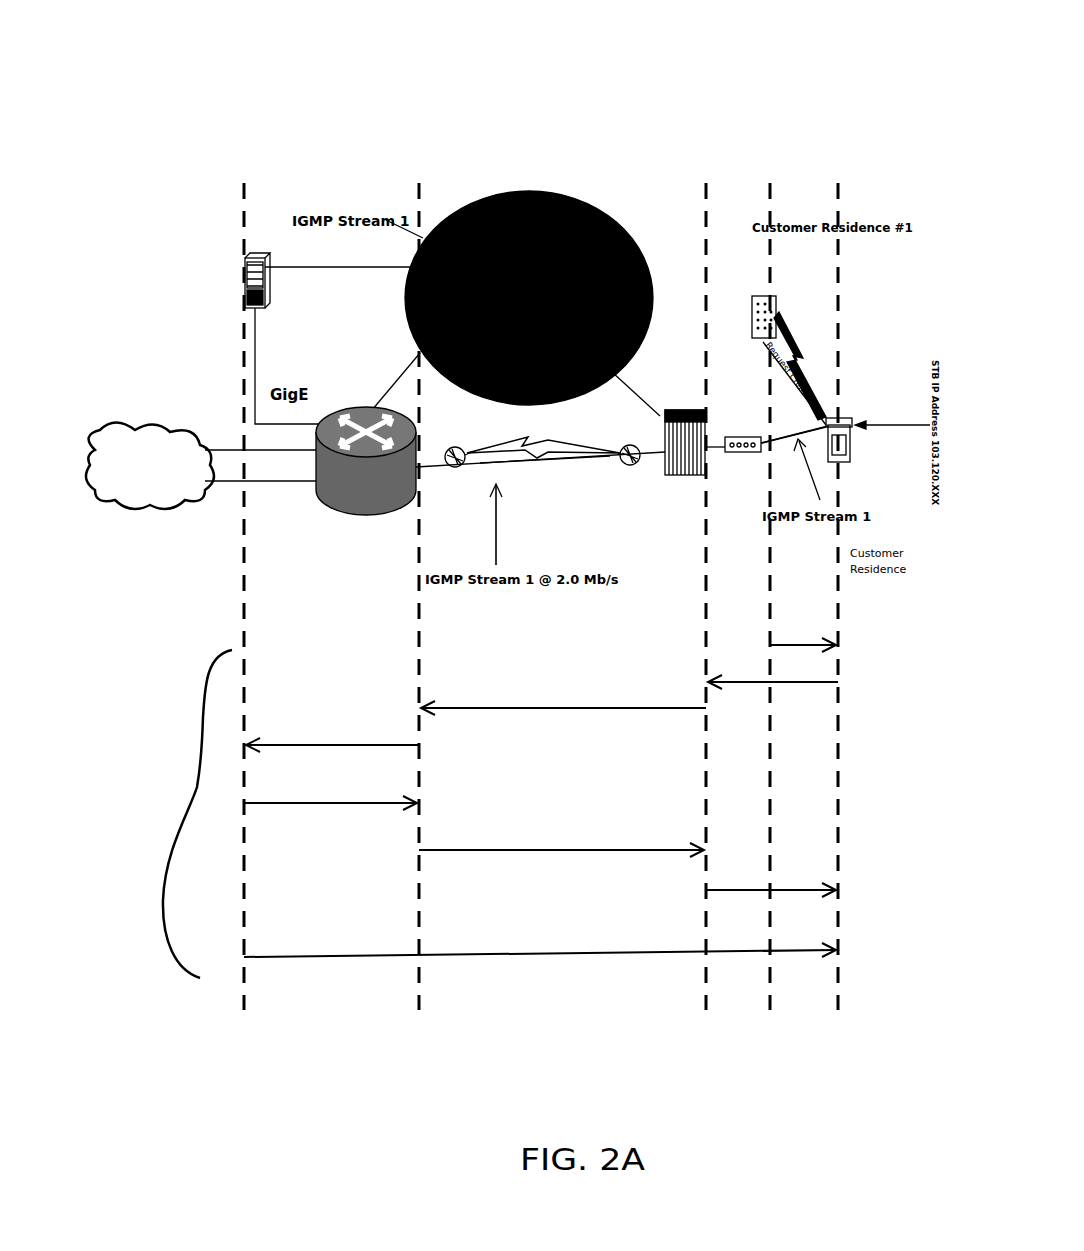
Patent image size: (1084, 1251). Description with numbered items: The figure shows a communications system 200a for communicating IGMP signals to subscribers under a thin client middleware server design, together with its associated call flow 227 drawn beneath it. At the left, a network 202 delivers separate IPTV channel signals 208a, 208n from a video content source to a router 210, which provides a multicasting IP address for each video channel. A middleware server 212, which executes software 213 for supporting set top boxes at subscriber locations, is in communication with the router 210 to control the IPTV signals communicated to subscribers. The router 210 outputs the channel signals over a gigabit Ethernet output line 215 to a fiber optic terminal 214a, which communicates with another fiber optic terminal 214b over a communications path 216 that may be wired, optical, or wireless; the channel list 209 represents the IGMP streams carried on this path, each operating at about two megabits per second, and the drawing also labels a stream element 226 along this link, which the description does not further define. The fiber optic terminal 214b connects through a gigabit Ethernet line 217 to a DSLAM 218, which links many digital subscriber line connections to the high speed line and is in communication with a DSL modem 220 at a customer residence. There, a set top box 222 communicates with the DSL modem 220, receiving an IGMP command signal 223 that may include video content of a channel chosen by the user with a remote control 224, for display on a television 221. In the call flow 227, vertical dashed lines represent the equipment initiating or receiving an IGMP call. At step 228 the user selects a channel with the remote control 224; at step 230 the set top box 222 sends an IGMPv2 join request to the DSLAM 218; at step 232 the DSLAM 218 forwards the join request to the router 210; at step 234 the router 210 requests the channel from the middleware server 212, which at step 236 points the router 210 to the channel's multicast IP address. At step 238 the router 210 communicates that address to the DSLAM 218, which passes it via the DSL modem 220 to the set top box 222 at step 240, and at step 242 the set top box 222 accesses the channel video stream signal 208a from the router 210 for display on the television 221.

The communications system 200a is at (548, 32).
The network 202 is at (118, 430).
The IPTV channel signal 208a is at (262, 455).
The IPTV channel signal 208n is at (255, 488).
The channel list 209 is at (572, 200).
The router 210 is at (368, 515).
The middleware server 212 is at (265, 292).
The software 213 is at (265, 275).
The fiber optic terminal 214a is at (468, 447).
The fiber optic terminal 214b is at (628, 445).
The gigabit Ethernet output line 215 is at (462, 470).
The communications path 216 is at (540, 445).
The gigabit Ethernet line 217 is at (658, 460).
The DSLAM 218 is at (688, 410).
The DSL modem 220 is at (740, 435).
The television 221 is at (852, 448).
The set top box 222 is at (848, 416).
The IGMP command signal 223 is at (786, 440).
The remote control 224 is at (777, 302).
The IGMP stream 1 226 is at (512, 472).
The call flow 227 is at (152, 814).
The channel selection step 228 is at (840, 650).
The join request step 230 is at (796, 686).
The join request forwarding step 232 is at (630, 712).
The channel request step 234 is at (372, 748).
The address pointing step 236 is at (265, 805).
The address communication step 238 is at (474, 852).
The address delivery step 240 is at (745, 892).
The stream access step 242 is at (310, 958).